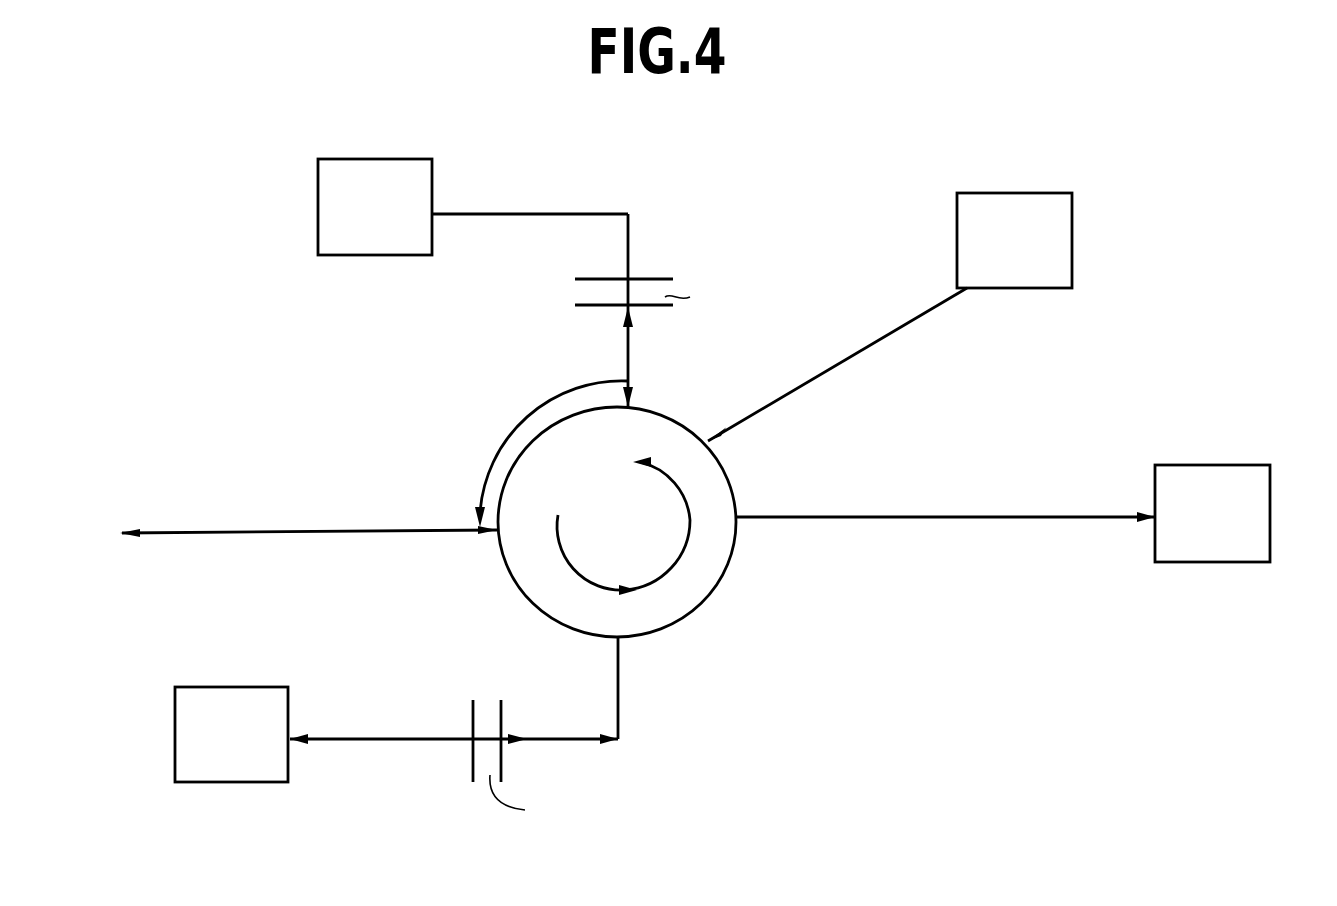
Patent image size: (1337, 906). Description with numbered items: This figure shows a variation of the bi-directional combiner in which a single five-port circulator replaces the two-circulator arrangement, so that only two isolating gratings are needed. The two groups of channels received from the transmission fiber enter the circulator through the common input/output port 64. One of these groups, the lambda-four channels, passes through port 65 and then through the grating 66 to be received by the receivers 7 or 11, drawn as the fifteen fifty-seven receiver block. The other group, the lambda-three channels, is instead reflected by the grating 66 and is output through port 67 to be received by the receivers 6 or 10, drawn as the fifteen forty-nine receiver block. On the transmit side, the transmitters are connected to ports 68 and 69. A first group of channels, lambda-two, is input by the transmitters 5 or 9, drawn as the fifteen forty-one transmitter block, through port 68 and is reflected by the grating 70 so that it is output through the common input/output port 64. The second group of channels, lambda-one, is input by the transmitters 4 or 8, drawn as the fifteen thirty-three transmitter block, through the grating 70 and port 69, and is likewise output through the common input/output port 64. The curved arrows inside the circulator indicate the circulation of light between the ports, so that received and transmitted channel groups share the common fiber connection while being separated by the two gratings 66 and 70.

The first multiplexer 4 is at (353, 226).
The multiplexer 8 is at (353, 226).
The second multiplexer 5 is at (1048, 270).
The multiplexer 9 is at (1048, 270).
The first demultiplexer 6 is at (1246, 538).
The demultiplexer 10 is at (1246, 538).
The second demultiplexer 7 is at (211, 755).
The demultiplexer 11 is at (211, 755).
The common input/output port 64 is at (617, 522).
The port 65 is at (611, 572).
The grating 66 is at (470, 757).
The port 67 is at (946, 529).
The port 68 is at (828, 390).
The port 69 is at (646, 518).
The grating 70 is at (650, 279).